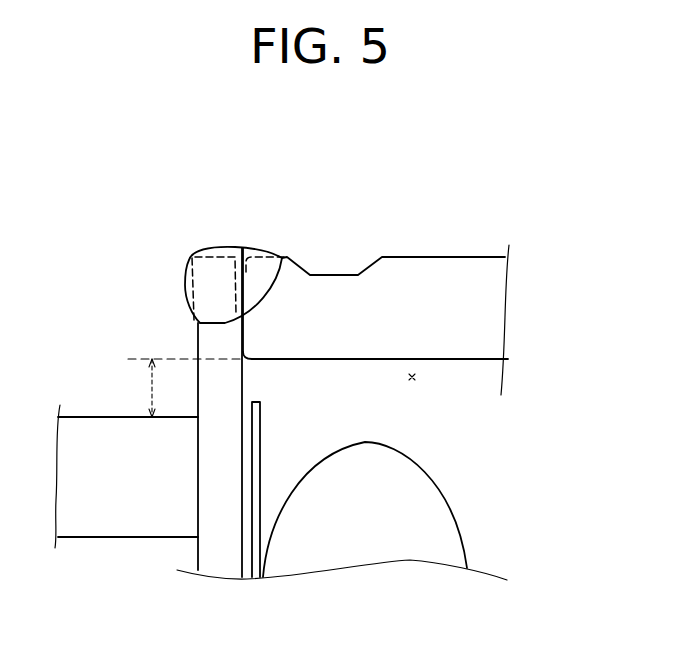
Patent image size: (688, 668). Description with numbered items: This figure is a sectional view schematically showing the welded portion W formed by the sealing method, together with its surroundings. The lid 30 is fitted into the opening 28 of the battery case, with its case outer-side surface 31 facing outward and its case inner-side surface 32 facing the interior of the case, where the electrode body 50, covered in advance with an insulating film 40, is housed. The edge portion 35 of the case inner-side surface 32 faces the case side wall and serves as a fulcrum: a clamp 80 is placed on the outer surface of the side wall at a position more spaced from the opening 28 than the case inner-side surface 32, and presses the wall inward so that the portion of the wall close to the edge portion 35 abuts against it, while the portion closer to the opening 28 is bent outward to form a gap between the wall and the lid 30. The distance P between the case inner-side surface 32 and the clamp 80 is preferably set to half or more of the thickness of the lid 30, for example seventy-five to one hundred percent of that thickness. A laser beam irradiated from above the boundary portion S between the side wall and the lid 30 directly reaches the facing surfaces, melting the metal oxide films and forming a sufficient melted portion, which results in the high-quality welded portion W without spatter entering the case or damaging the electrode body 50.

The opening 28 is at (414, 382).
The lid 30 is at (411, 300).
The case outer-side surface 31 is at (450, 257).
The case inner-side surface 32 is at (457, 359).
The edge portion 35 is at (252, 363).
The insulating film 40 is at (260, 510).
The electrode body 50 is at (445, 545).
The clamp 80 is at (90, 415).
The distance P is at (185, 388).
The boundary portion S is at (238, 247).
The welded portion W is at (248, 248).